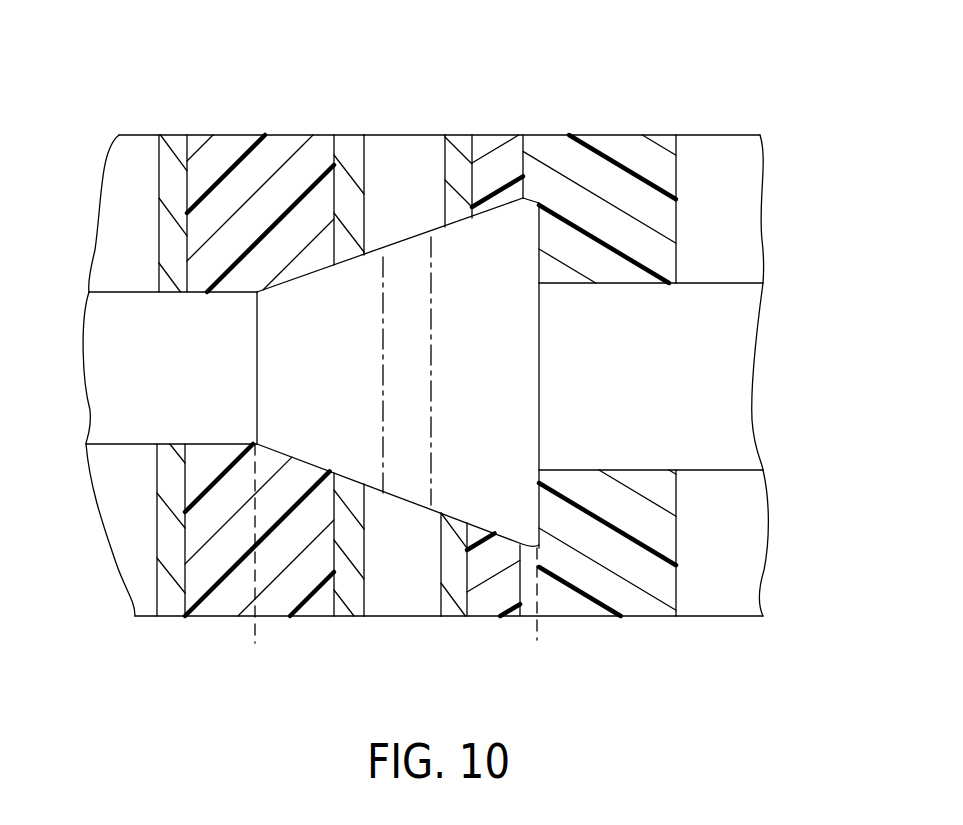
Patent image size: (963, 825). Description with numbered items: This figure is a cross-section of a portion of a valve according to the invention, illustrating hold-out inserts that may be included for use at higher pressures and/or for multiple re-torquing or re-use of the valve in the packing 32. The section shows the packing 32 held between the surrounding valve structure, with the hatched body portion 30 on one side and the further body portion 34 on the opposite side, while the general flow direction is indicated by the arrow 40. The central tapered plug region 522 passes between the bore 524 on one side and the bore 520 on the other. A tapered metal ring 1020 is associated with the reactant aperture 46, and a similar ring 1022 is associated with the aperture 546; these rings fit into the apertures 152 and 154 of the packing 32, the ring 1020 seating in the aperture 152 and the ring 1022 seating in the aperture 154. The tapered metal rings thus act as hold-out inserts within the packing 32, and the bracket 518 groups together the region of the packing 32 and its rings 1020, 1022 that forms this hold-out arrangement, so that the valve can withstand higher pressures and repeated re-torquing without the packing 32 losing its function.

The housing wall 30 is at (165, 143).
The packing 32 is at (230, 147).
The end ring 34 is at (645, 157).
The fluid flow direction 40 is at (805, 364).
The reactant aperture 46 is at (431, 264).
The aperture 152 is at (398, 152).
The aperture 154 is at (375, 607).
The seal pack assembly 518 is at (543, 657).
The outlet bore 520 is at (718, 460).
The tapered plug body 522 is at (547, 217).
The inlet bore 524 is at (95, 318).
The aperture 546 is at (431, 463).
The tapered metal ring 1020 is at (347, 143).
The ring 1022 is at (452, 600).